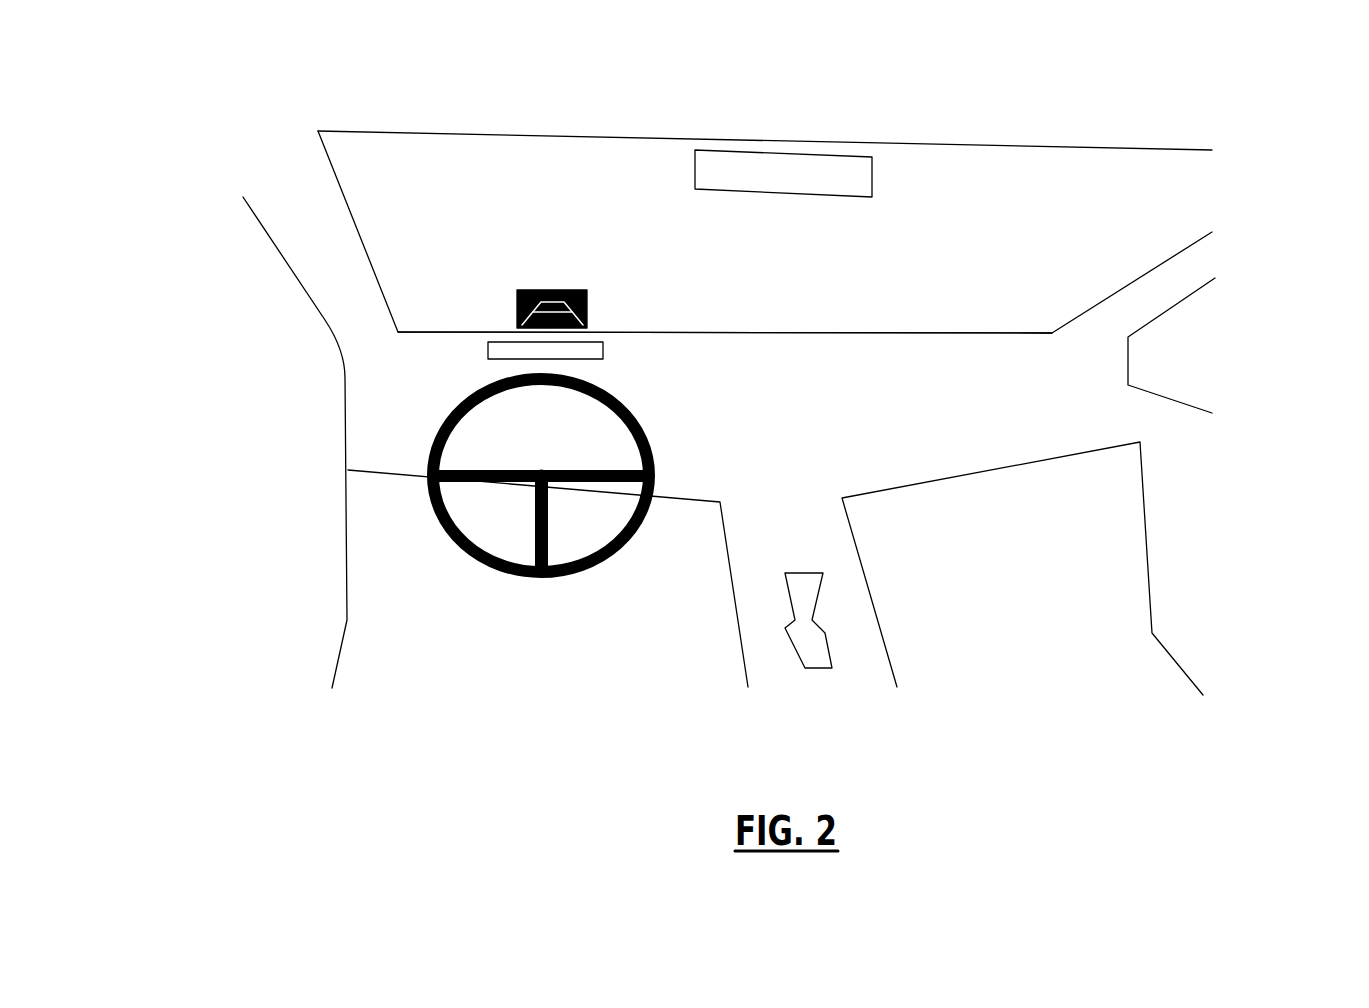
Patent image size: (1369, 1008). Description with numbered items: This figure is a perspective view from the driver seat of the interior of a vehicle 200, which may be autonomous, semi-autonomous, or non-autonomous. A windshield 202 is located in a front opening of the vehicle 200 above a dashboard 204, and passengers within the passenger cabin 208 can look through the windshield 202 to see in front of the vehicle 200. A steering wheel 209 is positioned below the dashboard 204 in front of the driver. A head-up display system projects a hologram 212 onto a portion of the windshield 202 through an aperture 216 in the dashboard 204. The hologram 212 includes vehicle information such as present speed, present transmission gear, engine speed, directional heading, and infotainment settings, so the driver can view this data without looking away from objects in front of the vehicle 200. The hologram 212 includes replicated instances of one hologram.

The vehicle 200 is at (298, 185).
The windshield 202 is at (460, 258).
The dashboard 204 is at (423, 380).
The passenger cabin 208 is at (1063, 282).
The steering wheel 209 is at (627, 402).
The hologram 212 is at (587, 302).
The aperture 216 is at (488, 348).